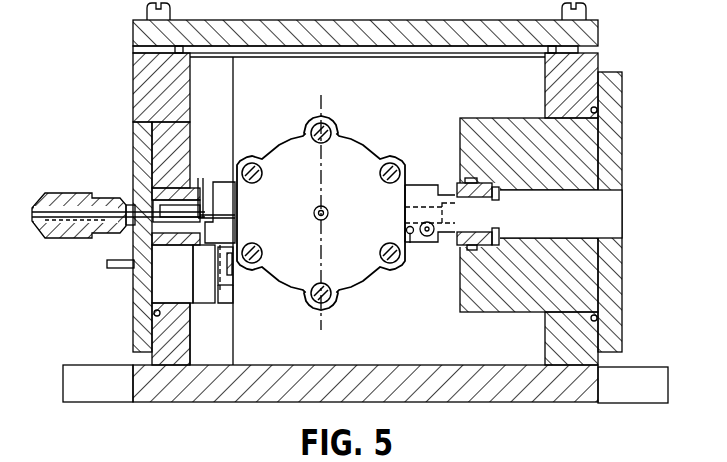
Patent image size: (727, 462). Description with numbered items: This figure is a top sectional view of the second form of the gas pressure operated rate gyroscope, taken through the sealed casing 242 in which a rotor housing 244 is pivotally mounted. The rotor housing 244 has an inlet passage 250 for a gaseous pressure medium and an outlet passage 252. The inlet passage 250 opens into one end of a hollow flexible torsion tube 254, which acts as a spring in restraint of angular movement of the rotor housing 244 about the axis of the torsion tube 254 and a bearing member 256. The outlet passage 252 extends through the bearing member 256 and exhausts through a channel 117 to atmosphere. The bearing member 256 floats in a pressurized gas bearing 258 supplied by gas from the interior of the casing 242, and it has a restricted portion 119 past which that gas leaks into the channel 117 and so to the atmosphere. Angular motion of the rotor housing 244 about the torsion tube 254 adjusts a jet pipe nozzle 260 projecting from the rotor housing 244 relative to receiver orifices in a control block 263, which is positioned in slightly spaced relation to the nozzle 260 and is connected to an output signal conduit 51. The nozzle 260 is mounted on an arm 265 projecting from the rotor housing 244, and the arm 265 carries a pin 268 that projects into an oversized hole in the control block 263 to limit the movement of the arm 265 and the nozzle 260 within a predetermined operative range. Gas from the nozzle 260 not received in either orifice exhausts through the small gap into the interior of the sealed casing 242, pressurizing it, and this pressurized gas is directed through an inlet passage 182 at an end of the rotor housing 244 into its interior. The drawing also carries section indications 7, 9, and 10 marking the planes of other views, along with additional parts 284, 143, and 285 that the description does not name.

The sealed casing 242 is at (528, 401).
The channel 117 is at (603, 238).
The inlet passage 250 is at (72, 193).
The output signal conduit 51 is at (115, 268).
The hollow flexible torsion tube 254 is at (226, 184).
The section line 10- 10 is at (208, 235).
The jet pipe nozzle 260 is at (220, 262).
The section line 9- 9 is at (210, 266).
The control block 263 is at (203, 305).
The arm 265 is at (243, 291).
The pin 268 is at (233, 301).
The rotor housing 244 is at (306, 249).
The section line 7- 7 is at (303, 106).
The inlet passage 182 is at (328, 209).
The plunger bracket 284 is at (410, 184).
The outlet passage 252 is at (405, 214).
The pin 143 is at (406, 232).
The pivot 285 is at (427, 222).
The gas bearing 258 is at (464, 253).
The bearing member 256 is at (456, 244).
The restricted portion 119 is at (500, 216).